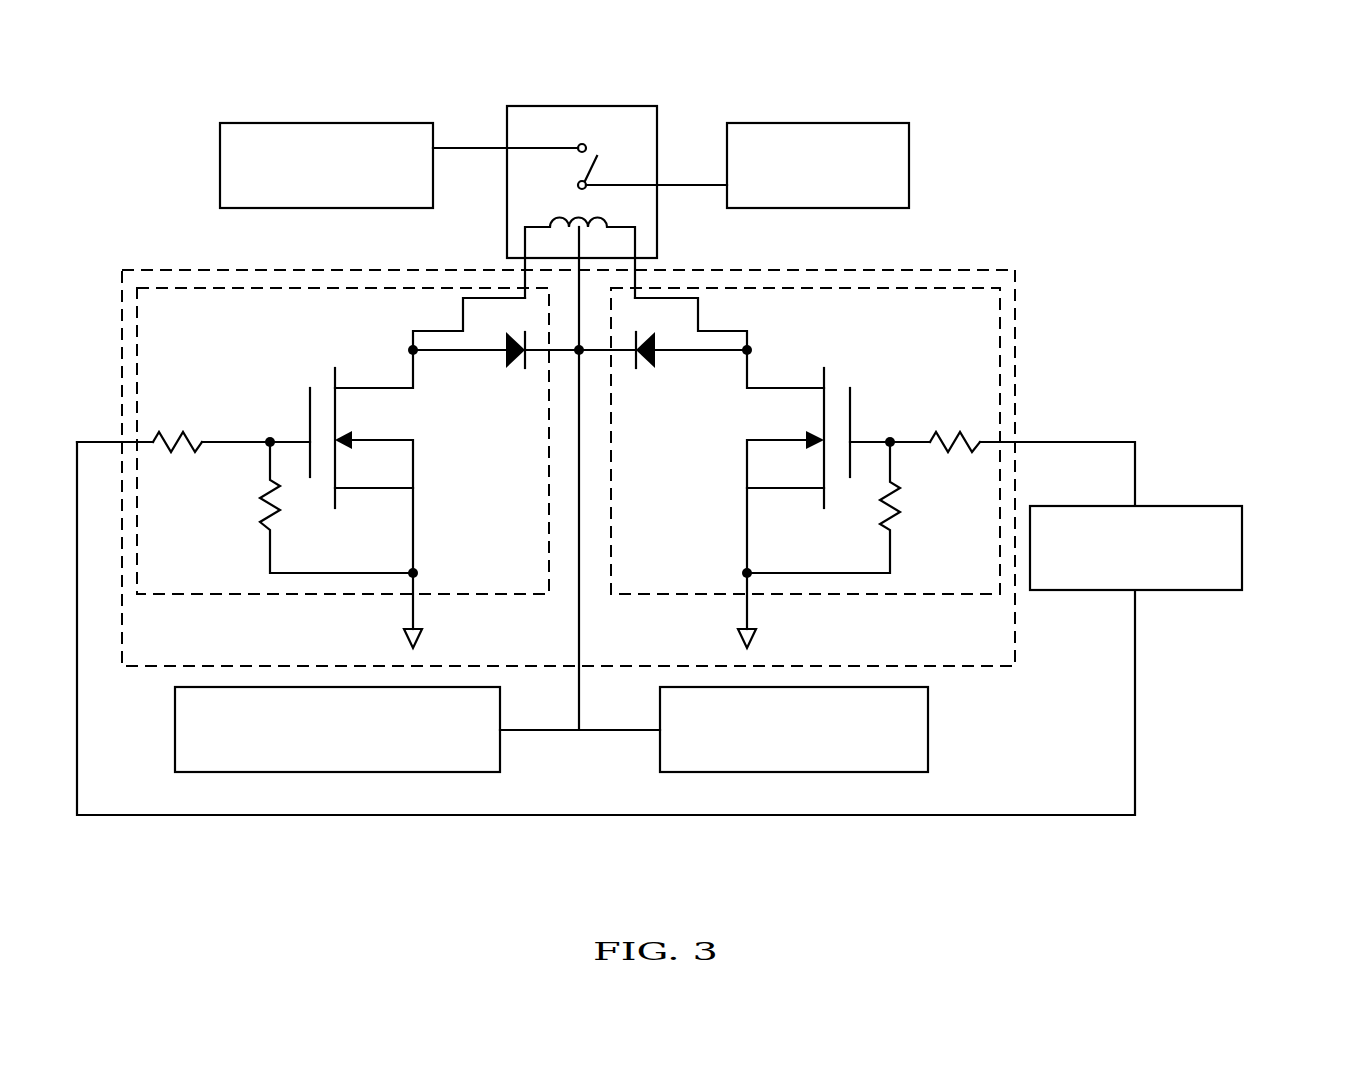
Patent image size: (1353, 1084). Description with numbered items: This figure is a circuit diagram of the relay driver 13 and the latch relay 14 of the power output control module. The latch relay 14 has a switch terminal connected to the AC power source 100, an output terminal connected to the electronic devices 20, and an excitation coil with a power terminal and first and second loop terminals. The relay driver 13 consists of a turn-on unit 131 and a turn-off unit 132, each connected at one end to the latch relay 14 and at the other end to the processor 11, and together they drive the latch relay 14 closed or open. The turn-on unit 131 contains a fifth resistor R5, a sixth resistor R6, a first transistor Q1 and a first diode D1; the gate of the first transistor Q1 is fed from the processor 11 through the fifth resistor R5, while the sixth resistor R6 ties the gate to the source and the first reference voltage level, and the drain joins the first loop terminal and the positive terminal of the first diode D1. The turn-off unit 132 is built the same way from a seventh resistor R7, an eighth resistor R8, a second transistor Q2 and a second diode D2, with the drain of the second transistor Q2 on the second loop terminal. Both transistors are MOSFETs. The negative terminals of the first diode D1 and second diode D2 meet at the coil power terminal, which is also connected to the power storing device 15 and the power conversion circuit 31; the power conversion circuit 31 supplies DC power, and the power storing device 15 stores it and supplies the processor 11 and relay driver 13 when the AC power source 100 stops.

The electronic devices 20 is at (252, 122).
The AC power source 100 is at (808, 122).
The latch relay 14 is at (528, 106).
The relay driver 13 is at (972, 270).
The turn-on unit 131 is at (330, 423).
The turn-off unit 132 is at (857, 456).
The processor 11 is at (1242, 548).
The power conversion circuit 31 is at (175, 728).
The power storing device 15 is at (928, 730).
The first transistor Q1 is at (437, 459).
The second transistor Q2 is at (713, 459).
The first diode D1 is at (517, 369).
The second diode D2 is at (645, 369).
The fifth resistor R5 is at (177, 426).
The sixth resistor R6 is at (311, 507).
The seventh resistor R7 is at (955, 426).
The eighth resistor R8 is at (844, 507).